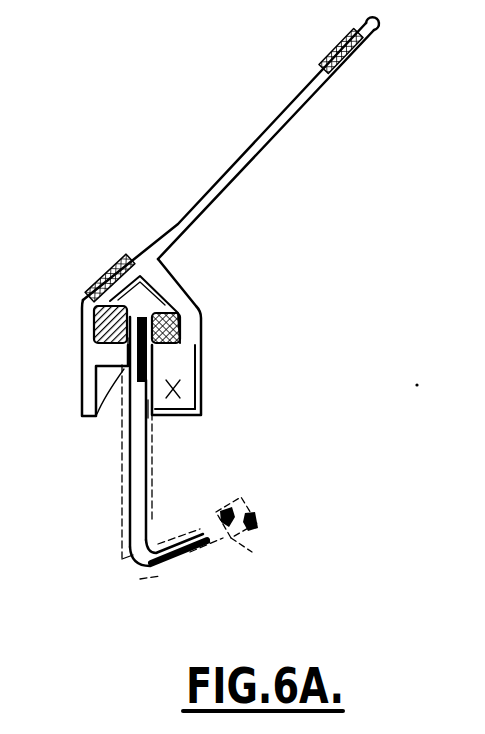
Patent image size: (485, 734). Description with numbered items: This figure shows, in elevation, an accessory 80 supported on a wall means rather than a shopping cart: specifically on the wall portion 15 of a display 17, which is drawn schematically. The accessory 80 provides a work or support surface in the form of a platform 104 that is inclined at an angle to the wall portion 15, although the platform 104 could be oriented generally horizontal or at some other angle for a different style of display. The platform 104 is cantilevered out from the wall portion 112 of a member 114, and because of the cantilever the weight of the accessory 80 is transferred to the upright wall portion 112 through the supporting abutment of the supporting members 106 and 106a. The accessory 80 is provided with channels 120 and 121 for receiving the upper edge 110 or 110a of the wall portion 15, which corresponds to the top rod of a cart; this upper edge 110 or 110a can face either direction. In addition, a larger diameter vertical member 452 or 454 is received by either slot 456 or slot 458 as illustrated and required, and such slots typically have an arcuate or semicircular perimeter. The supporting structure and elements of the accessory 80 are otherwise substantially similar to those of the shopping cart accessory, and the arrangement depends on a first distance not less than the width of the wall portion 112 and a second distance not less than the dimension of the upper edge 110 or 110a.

The accessory 80 is at (211, 135).
The platform 104 is at (300, 101).
The upper edge 110 is at (109, 284).
The channel 120 is at (150, 290).
The upper edge 110a is at (185, 316).
The slot 458 is at (128, 346).
The channel 121 is at (176, 370).
The supporting member 106a is at (183, 418).
The slot 456 is at (152, 412).
The supporting member 106 is at (100, 416).
The wall portion 112 is at (128, 500).
The member 114 is at (147, 497).
The vertical member 452 is at (233, 503).
The vertical member 454 is at (241, 541).
The wall portion 15 is at (128, 559).
The display 17 is at (168, 583).